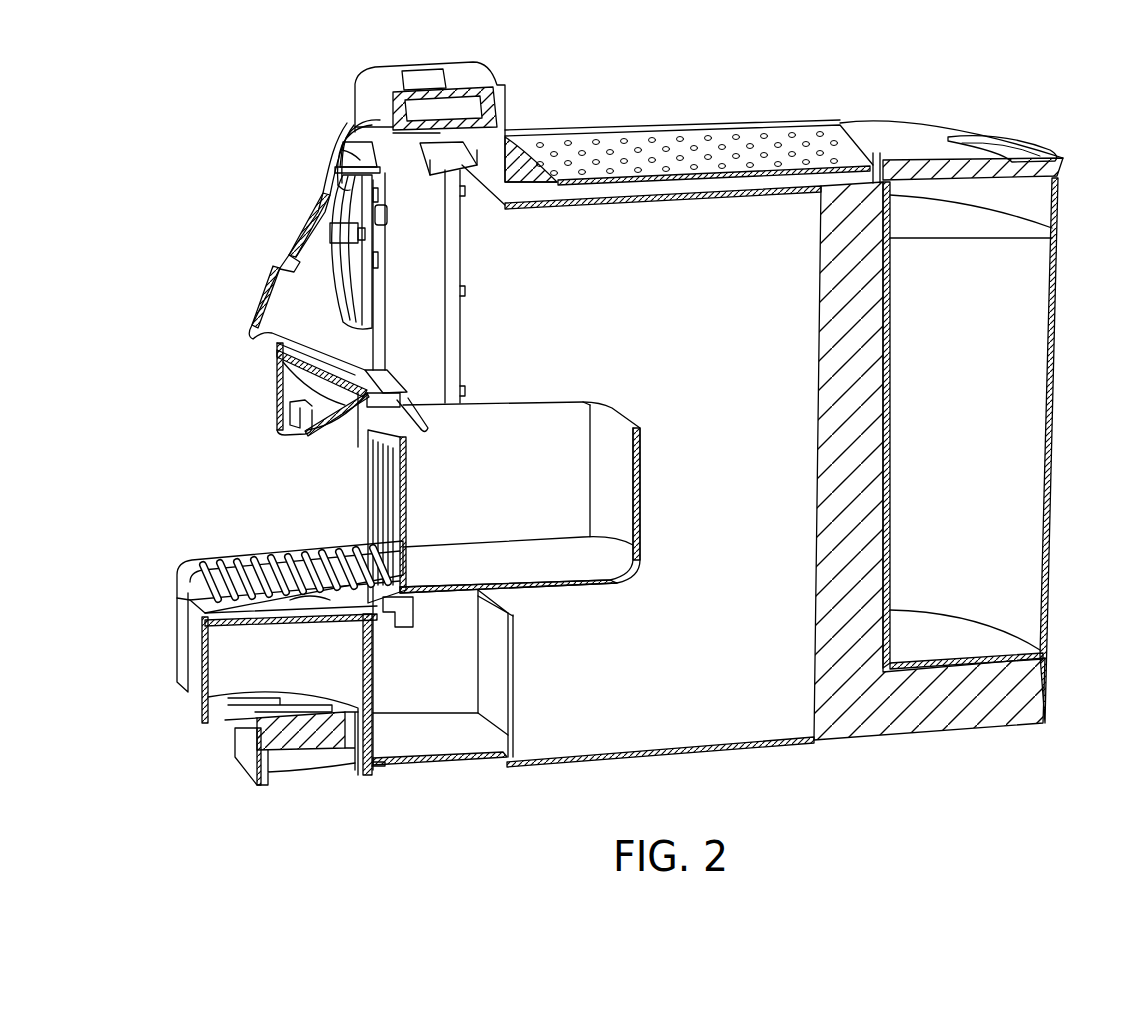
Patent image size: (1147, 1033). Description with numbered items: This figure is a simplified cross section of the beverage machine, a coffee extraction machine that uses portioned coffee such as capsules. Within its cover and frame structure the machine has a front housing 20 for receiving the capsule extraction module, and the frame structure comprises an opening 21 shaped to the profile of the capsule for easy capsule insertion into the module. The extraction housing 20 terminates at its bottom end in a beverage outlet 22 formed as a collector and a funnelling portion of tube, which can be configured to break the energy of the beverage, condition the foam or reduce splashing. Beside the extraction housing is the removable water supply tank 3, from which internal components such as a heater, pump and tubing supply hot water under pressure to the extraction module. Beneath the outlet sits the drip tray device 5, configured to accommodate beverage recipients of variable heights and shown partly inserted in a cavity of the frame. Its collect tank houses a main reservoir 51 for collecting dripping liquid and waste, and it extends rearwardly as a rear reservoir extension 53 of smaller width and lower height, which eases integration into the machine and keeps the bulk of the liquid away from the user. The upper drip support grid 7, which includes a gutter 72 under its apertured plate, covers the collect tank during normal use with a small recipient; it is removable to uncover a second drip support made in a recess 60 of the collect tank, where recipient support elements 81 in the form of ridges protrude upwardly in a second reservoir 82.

The removable water supply tank 3 is at (1024, 307).
The drip tray device 5 is at (128, 658).
The upper drip support grid 7 is at (290, 579).
The front housing 20 is at (296, 301).
The opening 21 is at (290, 262).
The beverage outlet 22 is at (290, 412).
The main reservoir 51 is at (446, 735).
The rear reservoir extension 53 is at (574, 736).
The recess 60 is at (257, 651).
The gutter 72 is at (320, 626).
The recipient support elements 81 is at (280, 742).
The second reservoir 82 is at (351, 742).